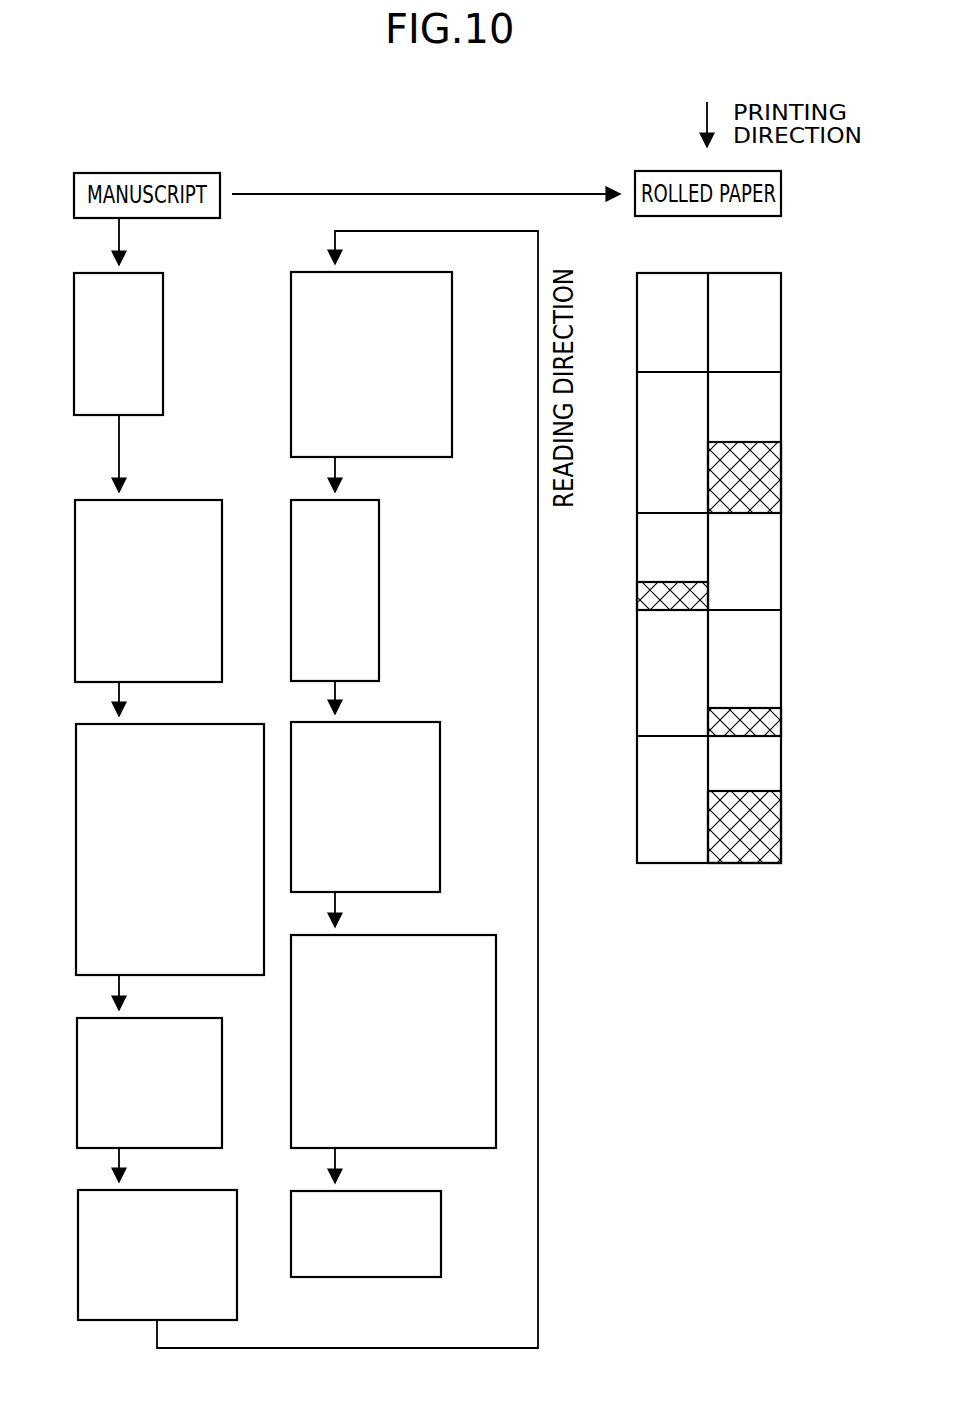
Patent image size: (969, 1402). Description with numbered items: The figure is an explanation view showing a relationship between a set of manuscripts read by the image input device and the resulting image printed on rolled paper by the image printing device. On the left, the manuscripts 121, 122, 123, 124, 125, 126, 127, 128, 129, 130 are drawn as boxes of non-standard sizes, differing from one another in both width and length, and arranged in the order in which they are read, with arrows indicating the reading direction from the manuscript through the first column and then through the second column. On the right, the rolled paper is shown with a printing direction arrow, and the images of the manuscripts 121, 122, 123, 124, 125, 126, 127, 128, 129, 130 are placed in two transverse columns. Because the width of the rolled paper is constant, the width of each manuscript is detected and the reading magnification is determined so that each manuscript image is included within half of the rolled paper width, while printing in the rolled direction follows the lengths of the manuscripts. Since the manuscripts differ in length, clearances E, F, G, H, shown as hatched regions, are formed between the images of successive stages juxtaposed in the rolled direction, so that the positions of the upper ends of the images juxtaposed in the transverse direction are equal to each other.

The manuscript 121 is at (387, 344).
The manuscript 122 is at (423, 495).
The manuscript 123 is at (388, 702).
The manuscript 124 is at (424, 772).
The manuscript 125 is at (389, 927).
The manuscript 126 is at (531, 422).
The manuscript 127 is at (495, 594).
The manuscript 128 is at (531, 769).
The manuscript 129 is at (495, 967).
The manuscript 130 is at (531, 1014).
The clearance E is at (781, 478).
The clearance F is at (640, 597).
The clearance G is at (781, 722).
The clearance H is at (773, 832).